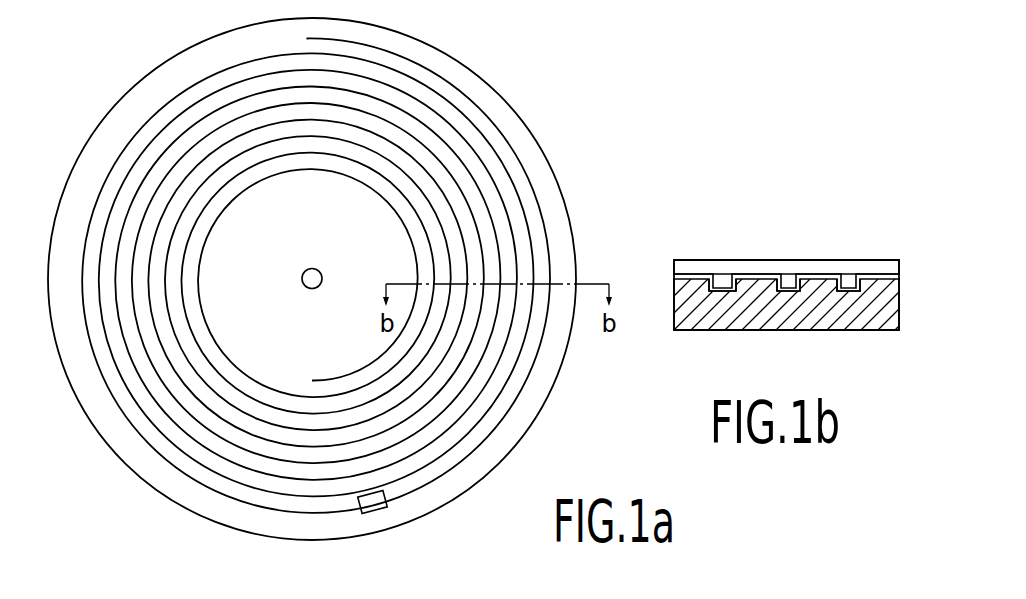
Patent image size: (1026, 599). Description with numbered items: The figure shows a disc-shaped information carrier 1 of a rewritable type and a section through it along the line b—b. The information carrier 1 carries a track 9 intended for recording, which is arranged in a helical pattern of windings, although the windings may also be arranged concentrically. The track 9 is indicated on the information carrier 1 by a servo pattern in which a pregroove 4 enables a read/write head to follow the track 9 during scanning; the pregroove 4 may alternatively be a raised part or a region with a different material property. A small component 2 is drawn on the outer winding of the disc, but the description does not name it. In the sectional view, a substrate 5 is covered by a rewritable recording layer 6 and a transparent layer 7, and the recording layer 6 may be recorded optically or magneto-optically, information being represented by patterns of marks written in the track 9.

In FIG. 1A, the information carrier 1 is at (508, 92).
In FIG. 1B, the information carrier 1 is at (691, 223).
In FIG. 1A, the electronic component (chip) 2 is at (377, 513).
In FIG. 1B, the pregroove 4 is at (731, 293).
In FIG. 1B, the substrate 5 is at (702, 316).
In FIG. 1B, the rewritable recording layer 6 is at (863, 272).
In FIG. 1B, the transparent layer 7 is at (782, 270).
In FIG. 1A, the track 9 is at (147, 437).